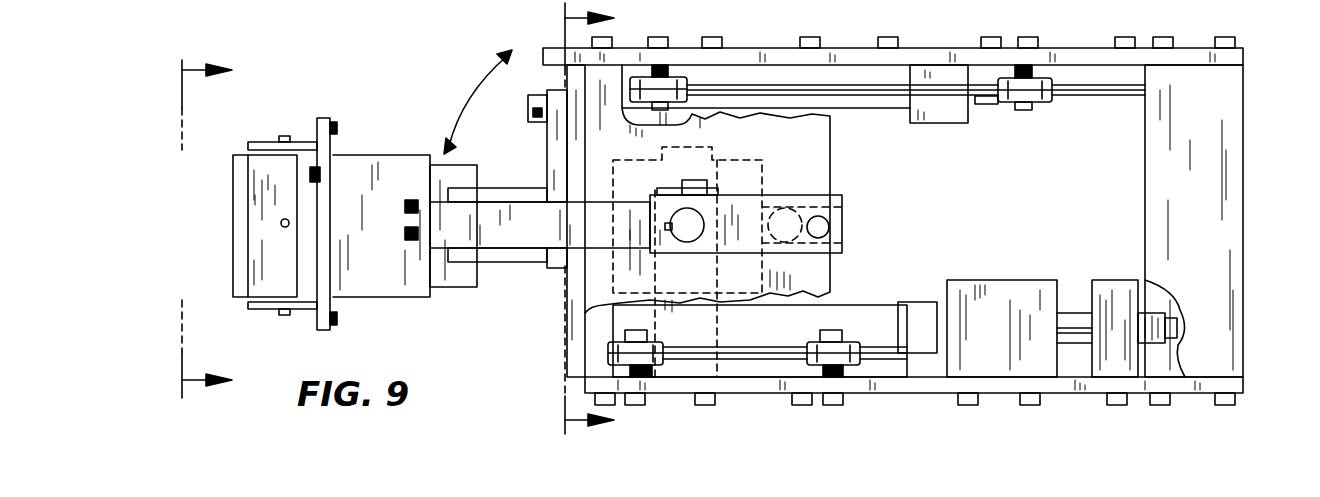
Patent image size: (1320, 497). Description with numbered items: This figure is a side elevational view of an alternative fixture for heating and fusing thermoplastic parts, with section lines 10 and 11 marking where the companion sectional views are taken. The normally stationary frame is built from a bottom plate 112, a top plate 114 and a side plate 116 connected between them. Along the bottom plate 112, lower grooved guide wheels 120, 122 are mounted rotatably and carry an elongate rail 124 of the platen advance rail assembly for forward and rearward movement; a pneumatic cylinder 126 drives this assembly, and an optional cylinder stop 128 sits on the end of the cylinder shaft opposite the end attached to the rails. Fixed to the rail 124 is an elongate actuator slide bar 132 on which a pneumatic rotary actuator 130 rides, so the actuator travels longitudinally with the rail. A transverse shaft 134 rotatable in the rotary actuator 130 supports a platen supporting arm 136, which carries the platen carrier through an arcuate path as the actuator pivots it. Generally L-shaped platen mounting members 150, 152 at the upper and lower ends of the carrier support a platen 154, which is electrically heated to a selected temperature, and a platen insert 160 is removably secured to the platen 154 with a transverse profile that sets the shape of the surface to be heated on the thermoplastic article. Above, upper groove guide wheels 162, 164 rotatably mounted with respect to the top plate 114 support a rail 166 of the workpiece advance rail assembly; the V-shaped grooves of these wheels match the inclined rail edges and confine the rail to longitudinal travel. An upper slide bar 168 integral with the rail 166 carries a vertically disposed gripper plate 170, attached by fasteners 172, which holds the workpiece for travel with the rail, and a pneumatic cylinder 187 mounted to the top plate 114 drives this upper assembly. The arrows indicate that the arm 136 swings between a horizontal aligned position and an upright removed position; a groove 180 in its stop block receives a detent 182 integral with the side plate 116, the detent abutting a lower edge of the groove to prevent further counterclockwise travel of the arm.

The section line 10- 10 is at (180, 229).
The section line 11- 11 is at (566, 221).
The bottom plate 112 is at (945, 391).
The top plate 114 is at (1085, 57).
The side plate 116 is at (1232, 147).
The lower grooved guide wheel 120 is at (685, 333).
The lower grooved guide wheel 122 is at (847, 343).
The rail 124 is at (778, 334).
The pneumatic cylinder 126 is at (997, 300).
The cylinder stop 128 is at (1115, 297).
The pneumatic rotary actuator 130 is at (748, 166).
The actuator slide bar 132 is at (860, 313).
The transverse shaft 134 is at (685, 233).
The platen supporting arm 136 is at (527, 240).
The platen mounting member 150 is at (300, 141).
The platen mounting member 152 is at (298, 312).
The platen 154 is at (262, 258).
The platen insert 160 is at (240, 192).
The upper groove guide wheel 162 is at (672, 80).
The upper groove guide wheel 164 is at (1010, 79).
The rail 166 is at (882, 98).
The upper slide bar 168 is at (978, 104).
The gripper plate 170 is at (557, 164).
The fastener 172 is at (528, 124).
The groove 180 is at (830, 239).
The detent 182 is at (785, 218).
The pneumatic cylinder 187 is at (940, 124).